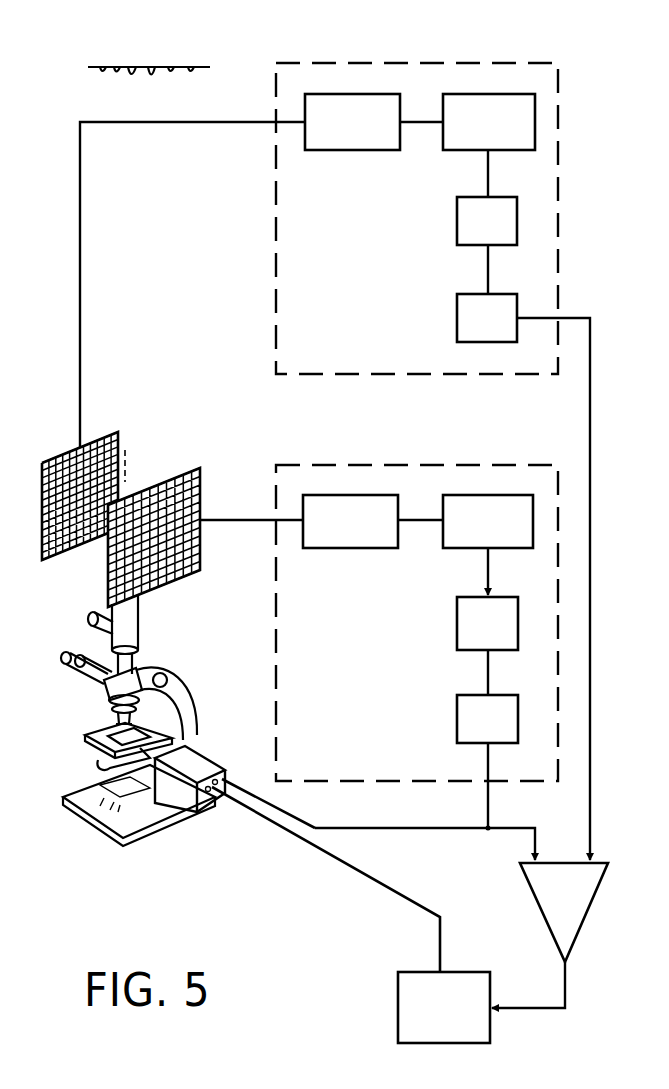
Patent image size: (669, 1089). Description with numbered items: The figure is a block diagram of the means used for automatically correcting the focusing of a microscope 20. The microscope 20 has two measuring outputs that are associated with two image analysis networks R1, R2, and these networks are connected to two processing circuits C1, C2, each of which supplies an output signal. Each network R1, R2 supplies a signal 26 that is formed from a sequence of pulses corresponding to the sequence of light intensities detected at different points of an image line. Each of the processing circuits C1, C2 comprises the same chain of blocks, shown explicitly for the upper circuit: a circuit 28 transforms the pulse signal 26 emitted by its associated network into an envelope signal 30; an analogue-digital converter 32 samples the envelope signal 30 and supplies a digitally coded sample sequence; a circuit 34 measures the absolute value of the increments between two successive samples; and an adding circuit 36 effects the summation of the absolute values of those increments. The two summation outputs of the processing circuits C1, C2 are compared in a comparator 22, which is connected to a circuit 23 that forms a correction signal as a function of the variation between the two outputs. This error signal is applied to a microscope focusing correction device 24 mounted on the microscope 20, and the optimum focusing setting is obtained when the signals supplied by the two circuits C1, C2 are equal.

The microscope 20 is at (52, 808).
The comparator 22 is at (560, 931).
The correction signal formation circuit 23 is at (444, 1007).
The microscope focusing correction device 24 is at (203, 757).
The signal 26 is at (150, 116).
The envelope forming circuit 28 is at (352, 122).
The envelope signal 30 is at (424, 112).
The analogue-digital converter 32 is at (489, 122).
The increment measuring circuit 34 is at (487, 221).
The adding circuit 36 is at (487, 318).
The image analysis network R1 is at (194, 468).
The image analysis network R2 is at (114, 446).
The processing circuit C1 is at (464, 465).
The processing circuit C2 is at (496, 62).